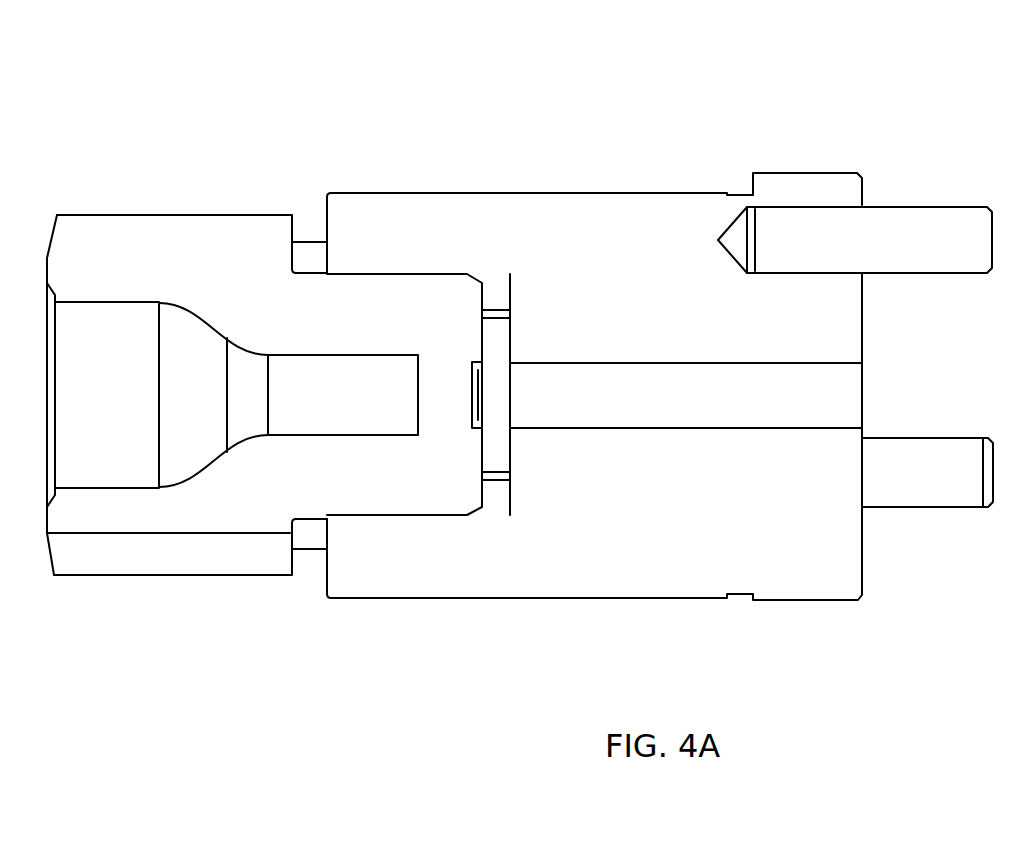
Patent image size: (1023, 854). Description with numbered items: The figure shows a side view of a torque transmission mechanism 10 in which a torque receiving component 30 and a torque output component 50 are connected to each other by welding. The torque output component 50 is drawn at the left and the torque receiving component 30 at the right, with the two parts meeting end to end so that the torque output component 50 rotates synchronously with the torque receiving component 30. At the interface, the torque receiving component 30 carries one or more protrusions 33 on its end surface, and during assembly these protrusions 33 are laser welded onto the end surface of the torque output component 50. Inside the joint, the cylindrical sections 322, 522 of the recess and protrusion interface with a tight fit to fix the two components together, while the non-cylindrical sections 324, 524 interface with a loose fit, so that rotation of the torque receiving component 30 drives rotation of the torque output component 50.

The torque transmission mechanism 10 is at (510, 136).
The torque receiving component 30 is at (606, 247).
The protrusions 33 is at (311, 257).
The torque output component 50 is at (169, 245).
The cylindrical section 322 is at (317, 460).
The cylindrical section 522 is at (354, 520).
The non-cylindrical section 324 is at (394, 483).
The non-cylindrical section 524 is at (450, 517).